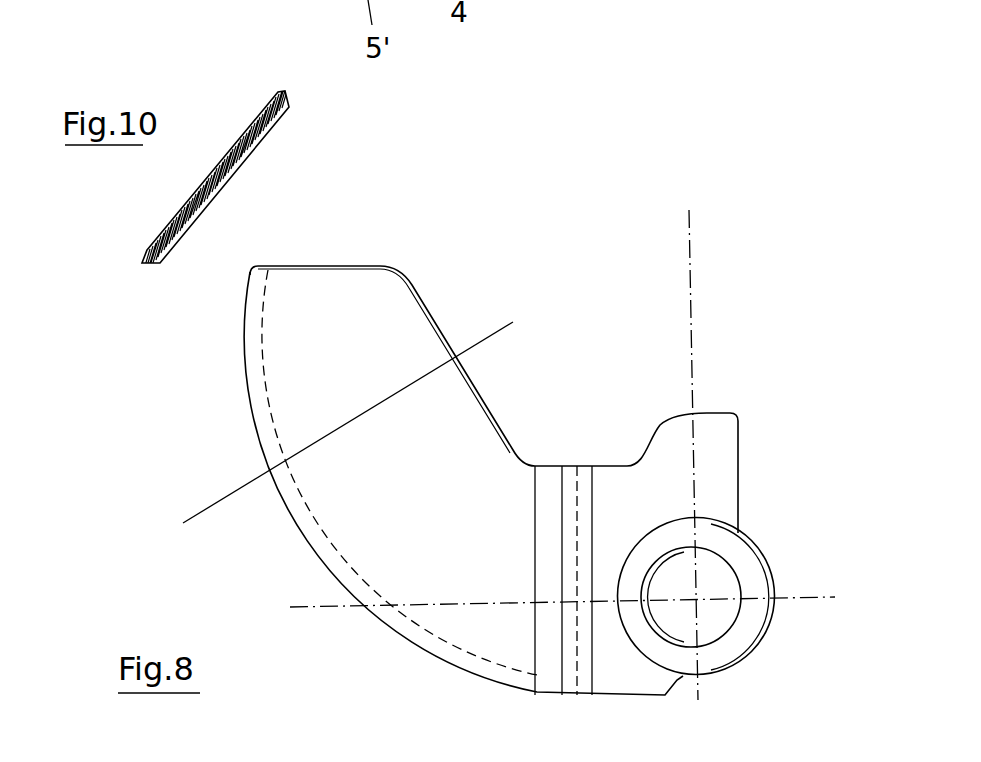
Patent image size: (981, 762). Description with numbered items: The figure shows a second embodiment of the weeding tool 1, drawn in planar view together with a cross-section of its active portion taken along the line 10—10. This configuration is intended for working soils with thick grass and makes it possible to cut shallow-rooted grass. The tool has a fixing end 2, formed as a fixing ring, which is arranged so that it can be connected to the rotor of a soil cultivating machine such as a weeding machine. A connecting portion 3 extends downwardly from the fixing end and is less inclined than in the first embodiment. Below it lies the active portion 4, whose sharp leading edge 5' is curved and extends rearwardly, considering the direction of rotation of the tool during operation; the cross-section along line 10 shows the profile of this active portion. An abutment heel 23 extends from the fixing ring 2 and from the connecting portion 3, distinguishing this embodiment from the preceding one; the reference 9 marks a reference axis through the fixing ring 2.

In FIG. 8, the weeding tool 1 is at (543, 407).
In FIG. 8, the fixing end 2 is at (743, 573).
In FIG. 8, the connecting portion 3 is at (562, 625).
In FIG. 10, the active portion 4 is at (220, 158).
In FIG. 8, the active portion 4 is at (412, 358).
In FIG. 10, the sharp leading edge 5' is at (99, 314).
In FIG. 8, the sharp leading edge 5' is at (250, 442).
In FIG. 8, the axis / reference line 9 is at (318, 608).
In FIG. 8, the section line 10 is at (500, 330).
In FIG. 8, the abutment heel 23 is at (752, 463).